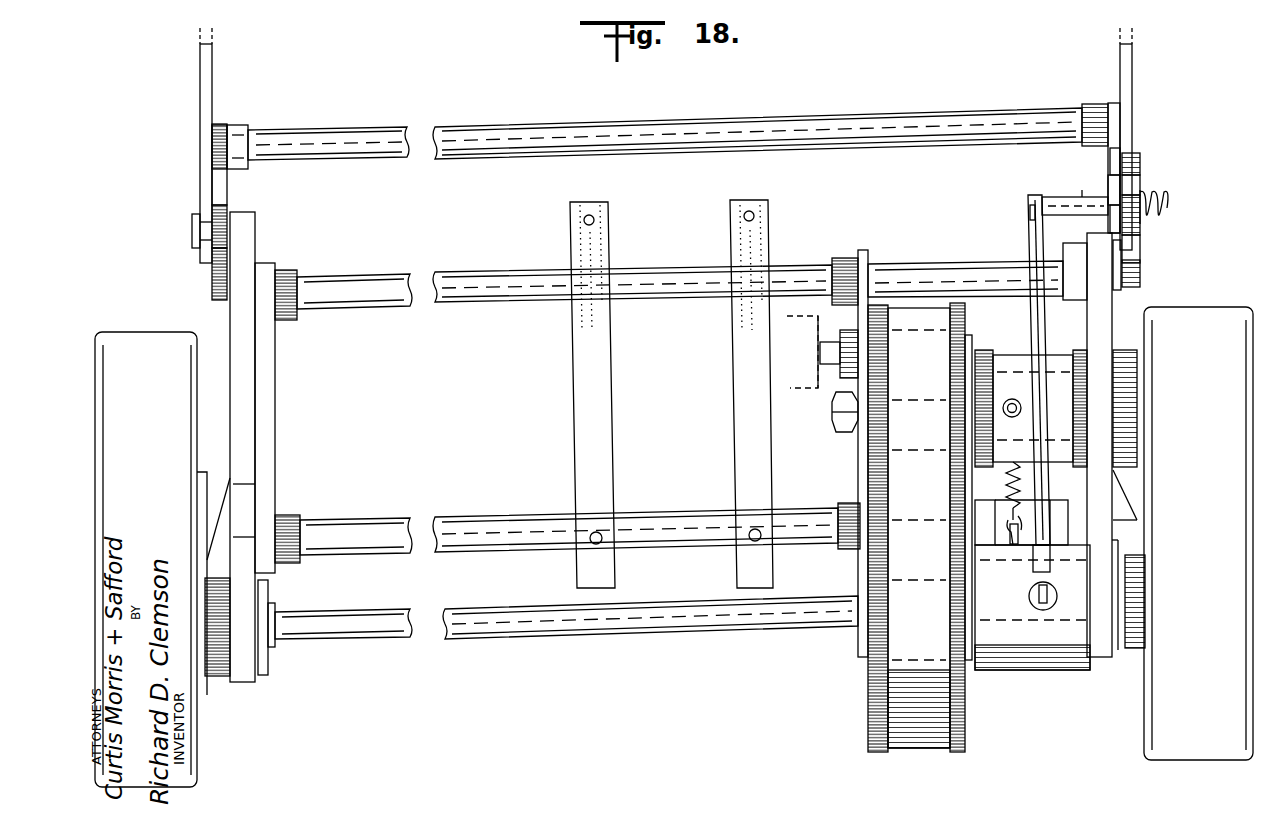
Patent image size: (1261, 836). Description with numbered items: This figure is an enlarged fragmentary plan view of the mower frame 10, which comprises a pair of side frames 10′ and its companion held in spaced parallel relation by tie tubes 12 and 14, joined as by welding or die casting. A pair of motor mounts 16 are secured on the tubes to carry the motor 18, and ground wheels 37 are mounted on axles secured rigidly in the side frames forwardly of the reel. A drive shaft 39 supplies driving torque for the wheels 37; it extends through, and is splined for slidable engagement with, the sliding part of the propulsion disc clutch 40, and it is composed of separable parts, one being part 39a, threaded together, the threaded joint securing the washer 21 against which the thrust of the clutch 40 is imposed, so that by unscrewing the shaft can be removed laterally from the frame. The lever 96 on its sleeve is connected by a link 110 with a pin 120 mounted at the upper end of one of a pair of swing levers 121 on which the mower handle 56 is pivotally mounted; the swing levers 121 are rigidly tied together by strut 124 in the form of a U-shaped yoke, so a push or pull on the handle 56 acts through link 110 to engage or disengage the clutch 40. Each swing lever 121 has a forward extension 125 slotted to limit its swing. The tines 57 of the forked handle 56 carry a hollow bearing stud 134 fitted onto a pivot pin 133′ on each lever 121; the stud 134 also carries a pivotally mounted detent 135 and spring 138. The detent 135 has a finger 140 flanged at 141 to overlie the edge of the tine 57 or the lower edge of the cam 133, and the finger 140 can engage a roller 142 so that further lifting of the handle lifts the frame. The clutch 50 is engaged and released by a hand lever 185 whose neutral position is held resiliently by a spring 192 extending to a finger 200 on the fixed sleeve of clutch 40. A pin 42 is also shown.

The mower frame 10 is at (360, 250).
The mower handle 56 is at (198, 66).
The tines 57 is at (208, 182).
The strut 124 is at (454, 140).
The swing levers 121 is at (230, 196).
The forward extension 125 is at (222, 272).
The pivot pin 133′ is at (195, 232).
The ground wheels 37 is at (118, 350).
The motor mounts 16 is at (592, 243).
The tie tube 14 is at (444, 290).
The tie tube 12 is at (454, 528).
The separable part of wheel-driving shaft 39a is at (452, 632).
The drive shaft 39 is at (670, 638).
The washer 21 is at (860, 632).
The pin 42 is at (836, 353).
The motor 18 is at (812, 394).
The propulsion disc clutch 40 is at (1014, 675).
The clutch 50 is at (1015, 333).
The hand lever 185 is at (1012, 398).
The spring 192 is at (1006, 488).
The finger 200 is at (1016, 542).
The link 110 is at (1034, 252).
The lever 96 is at (1044, 606).
The pin 120 is at (1028, 214).
The flange 141 is at (1115, 176).
The detent 135 is at (1134, 168).
The spring 138 is at (1146, 194).
The hollow bearing stud 134 is at (1163, 206).
The finger 140 is at (1130, 228).
The cam 133 is at (1132, 252).
The roller 142 is at (1132, 276).
The side frame 10′ is at (1100, 345).